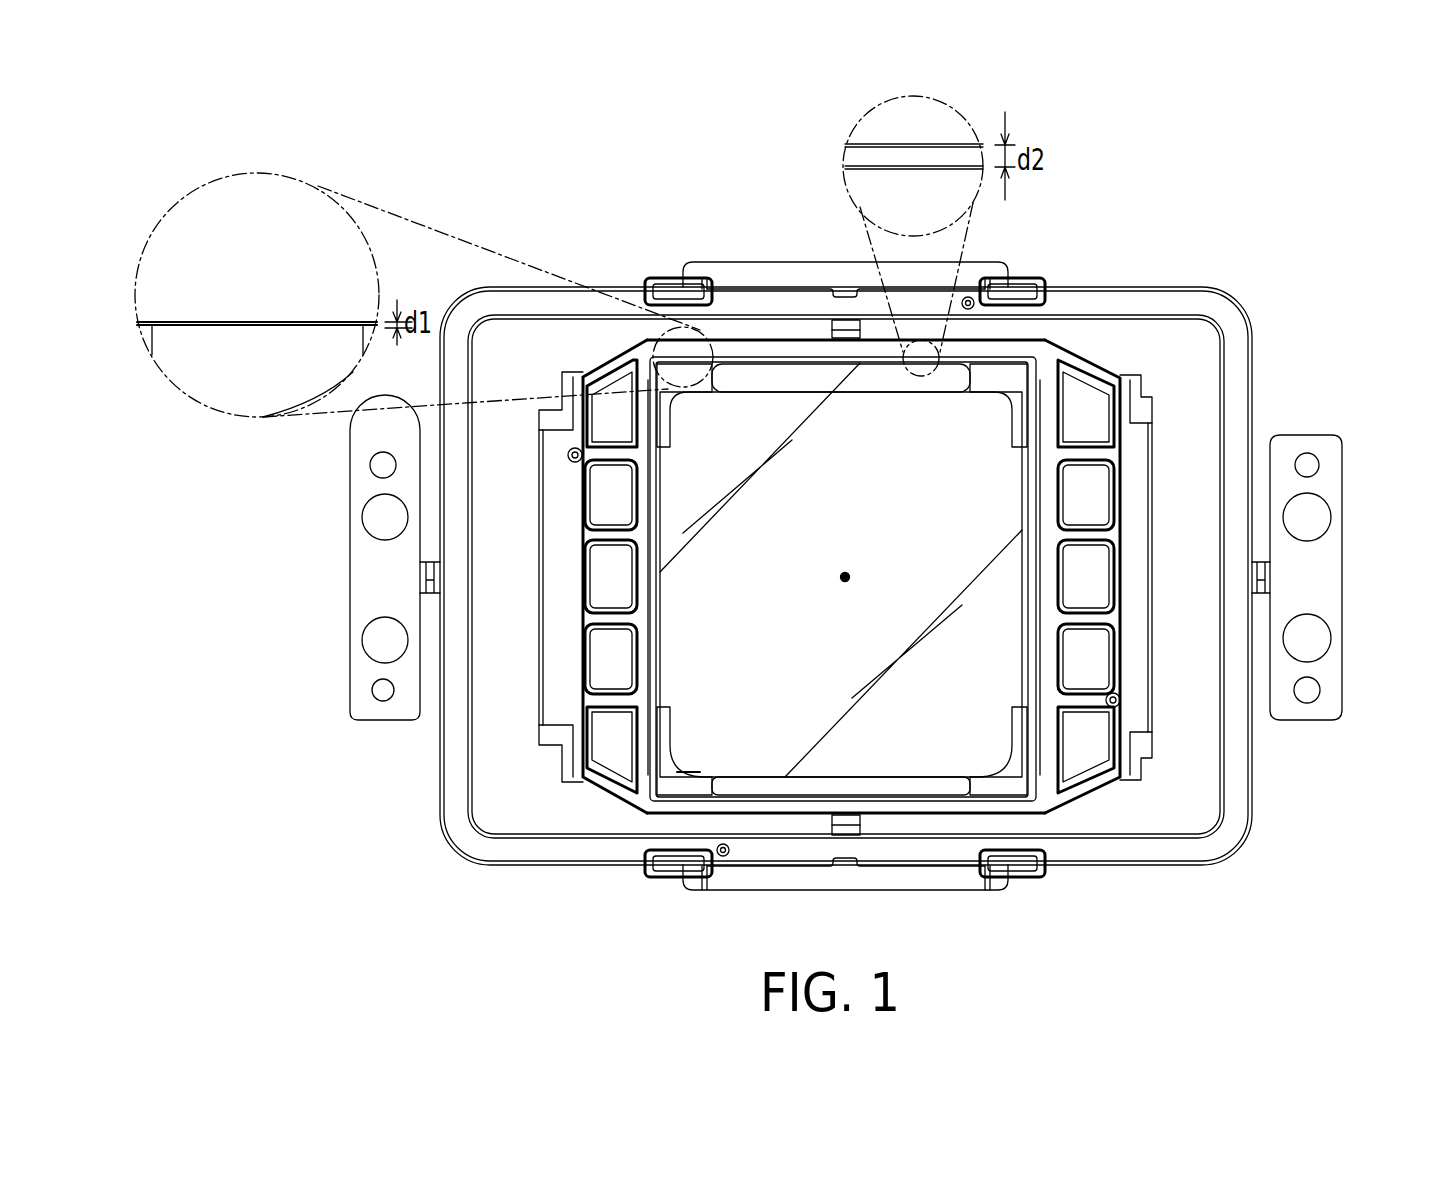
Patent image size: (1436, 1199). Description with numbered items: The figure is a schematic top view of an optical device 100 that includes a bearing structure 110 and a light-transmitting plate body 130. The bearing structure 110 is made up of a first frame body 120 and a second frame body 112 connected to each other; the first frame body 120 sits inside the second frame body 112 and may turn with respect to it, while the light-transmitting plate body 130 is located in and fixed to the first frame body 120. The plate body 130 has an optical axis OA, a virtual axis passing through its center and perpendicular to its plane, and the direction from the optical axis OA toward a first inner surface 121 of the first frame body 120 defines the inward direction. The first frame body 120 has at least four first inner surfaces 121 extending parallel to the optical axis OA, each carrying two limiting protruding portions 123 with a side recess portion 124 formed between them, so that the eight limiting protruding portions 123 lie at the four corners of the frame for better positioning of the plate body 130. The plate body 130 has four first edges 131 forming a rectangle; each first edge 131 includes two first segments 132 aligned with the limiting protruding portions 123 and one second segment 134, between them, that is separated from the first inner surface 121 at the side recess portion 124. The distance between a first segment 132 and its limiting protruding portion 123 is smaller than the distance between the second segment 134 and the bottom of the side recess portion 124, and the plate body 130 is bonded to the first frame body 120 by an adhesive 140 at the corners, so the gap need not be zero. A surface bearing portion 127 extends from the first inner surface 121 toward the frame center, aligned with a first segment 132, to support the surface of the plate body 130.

The optical device 100 is at (1356, 306).
The bearing structure 110 is at (1200, 195).
The second frame body 112 is at (1163, 287).
The first frame body 120 is at (1062, 348).
The first inner surface 121 is at (212, 600).
The limiting protruding portion 123 is at (637, 388).
The side recess portion 124 is at (773, 338).
The surface bearing portion 127 is at (677, 777).
The light-transmitting plate body 130 is at (869, 628).
The first edge 131 is at (212, 735).
The first segment 132 is at (712, 392).
The second segment 134 is at (970, 392).
The adhesive 140 is at (655, 435).
The optical axis OA is at (846, 575).